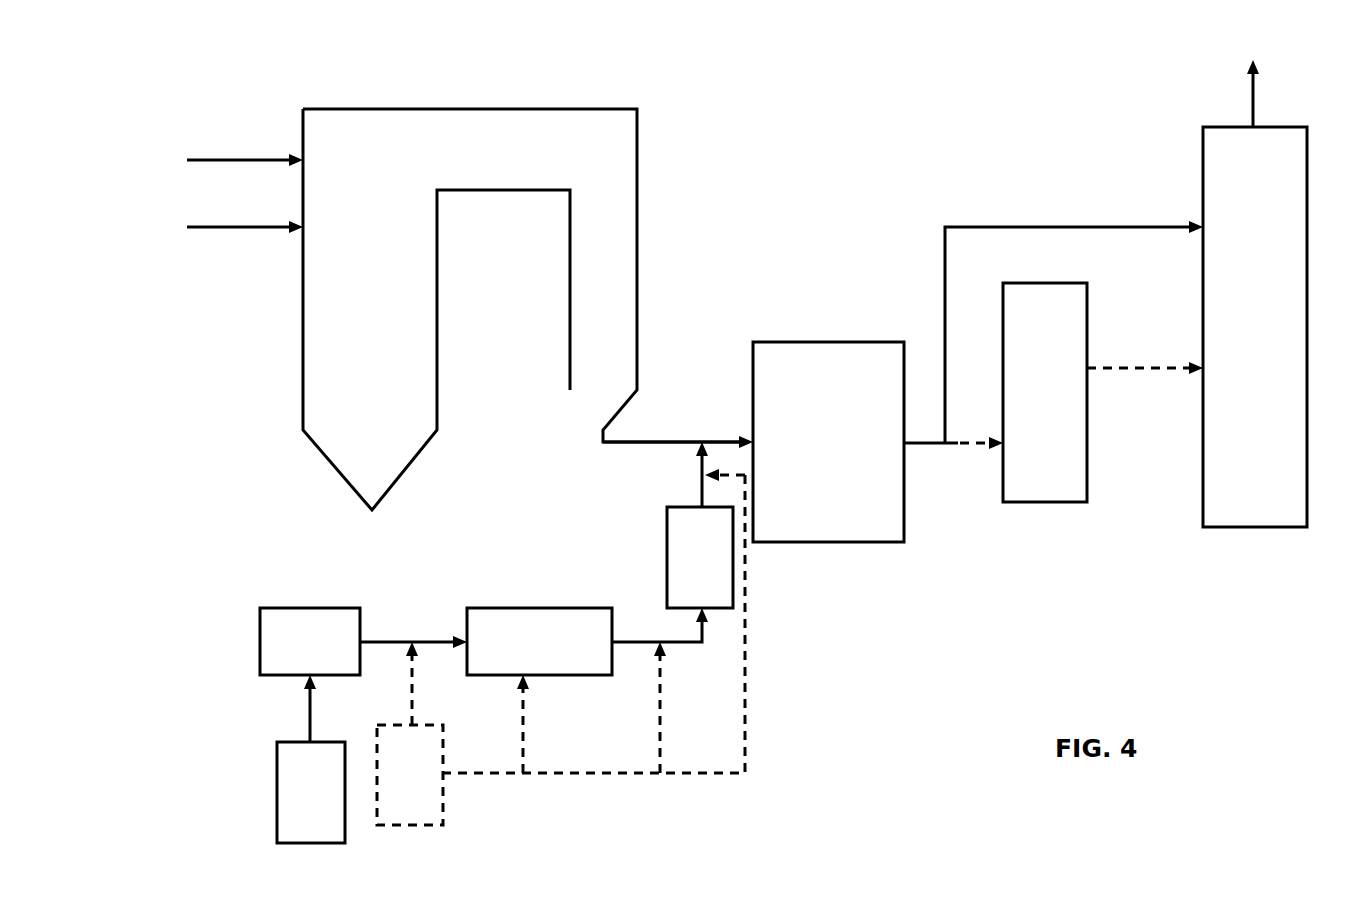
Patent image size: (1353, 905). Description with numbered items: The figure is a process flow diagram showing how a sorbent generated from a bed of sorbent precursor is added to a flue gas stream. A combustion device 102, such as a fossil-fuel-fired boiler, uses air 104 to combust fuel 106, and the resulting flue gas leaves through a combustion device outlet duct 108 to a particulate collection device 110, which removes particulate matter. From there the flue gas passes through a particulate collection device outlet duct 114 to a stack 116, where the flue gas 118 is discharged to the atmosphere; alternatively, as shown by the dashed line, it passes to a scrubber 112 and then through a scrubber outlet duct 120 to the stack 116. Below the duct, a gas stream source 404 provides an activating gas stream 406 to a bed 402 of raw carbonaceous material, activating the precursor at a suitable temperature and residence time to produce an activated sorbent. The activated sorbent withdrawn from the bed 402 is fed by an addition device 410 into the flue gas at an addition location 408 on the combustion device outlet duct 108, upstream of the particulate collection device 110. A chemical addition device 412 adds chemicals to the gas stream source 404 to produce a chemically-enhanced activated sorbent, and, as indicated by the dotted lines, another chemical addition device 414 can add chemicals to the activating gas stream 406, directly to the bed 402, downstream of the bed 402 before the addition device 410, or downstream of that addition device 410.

The combustion device 102 is at (473, 109).
The air 104 is at (283, 157).
The fuel 106 is at (283, 231).
The combustion device outlet duct 108 is at (640, 442).
The particulate collection device 110 is at (805, 342).
The scrubber 112 is at (1012, 502).
The particulate collection device outlet duct 114 is at (1053, 227).
The stack 116 is at (1203, 162).
The flue gas 118 is at (1255, 110).
The scrubber outlet duct 120 is at (1112, 370).
The bed 402 is at (585, 608).
The gas stream source 404 is at (270, 608).
The activating gas stream 406 is at (437, 640).
The addition location 408 is at (700, 450).
The addition device 410 is at (667, 570).
The chemical addition device 412 is at (277, 782).
The chemical addition device 414 is at (445, 822).